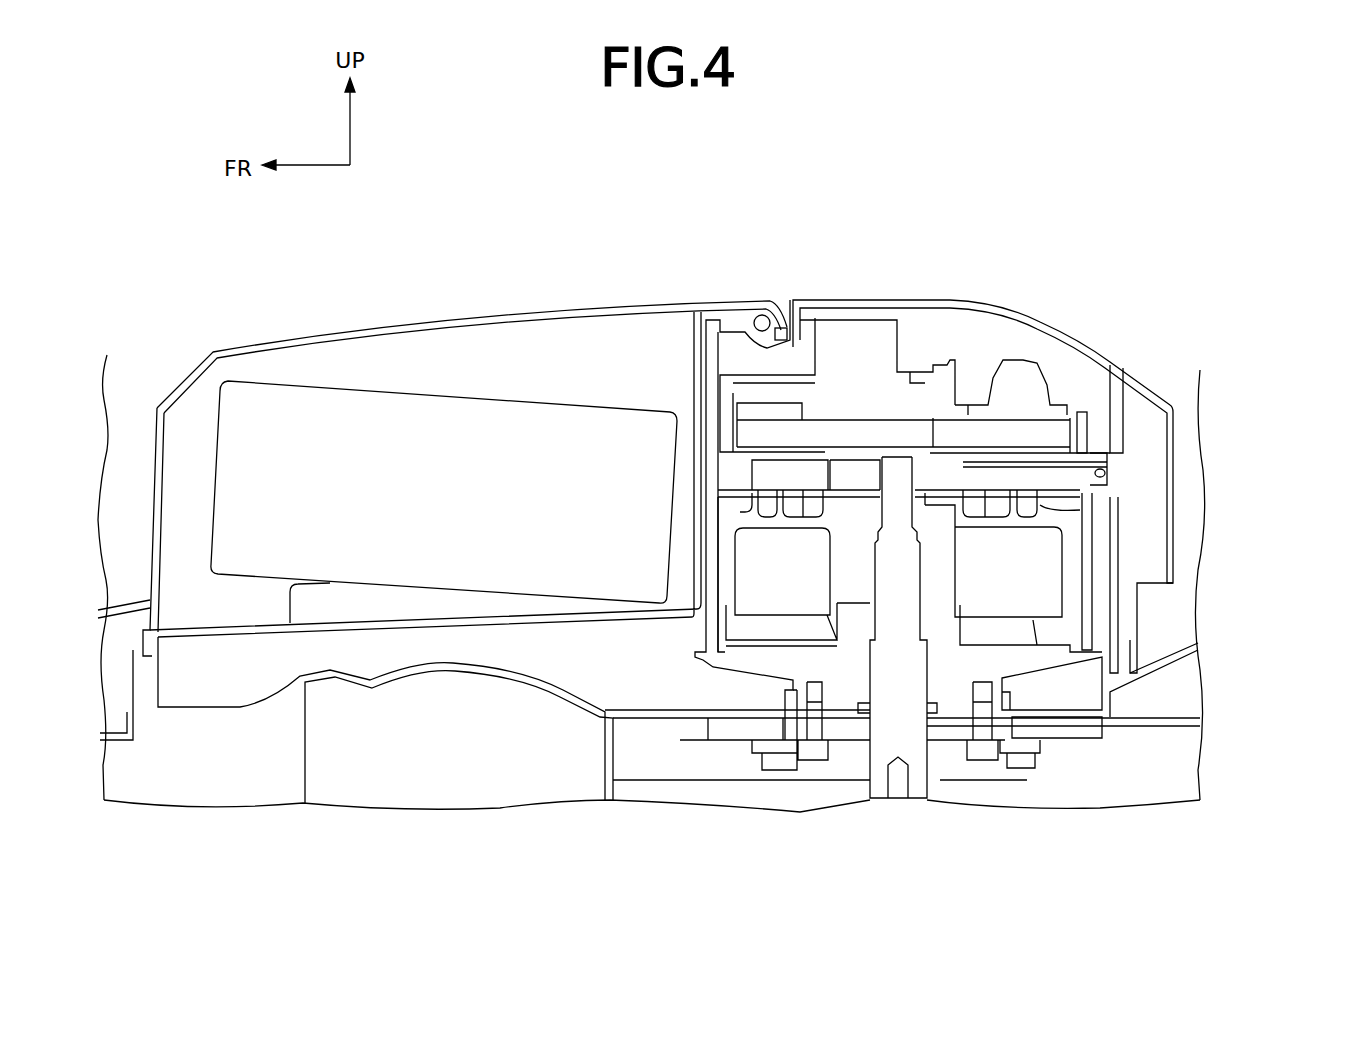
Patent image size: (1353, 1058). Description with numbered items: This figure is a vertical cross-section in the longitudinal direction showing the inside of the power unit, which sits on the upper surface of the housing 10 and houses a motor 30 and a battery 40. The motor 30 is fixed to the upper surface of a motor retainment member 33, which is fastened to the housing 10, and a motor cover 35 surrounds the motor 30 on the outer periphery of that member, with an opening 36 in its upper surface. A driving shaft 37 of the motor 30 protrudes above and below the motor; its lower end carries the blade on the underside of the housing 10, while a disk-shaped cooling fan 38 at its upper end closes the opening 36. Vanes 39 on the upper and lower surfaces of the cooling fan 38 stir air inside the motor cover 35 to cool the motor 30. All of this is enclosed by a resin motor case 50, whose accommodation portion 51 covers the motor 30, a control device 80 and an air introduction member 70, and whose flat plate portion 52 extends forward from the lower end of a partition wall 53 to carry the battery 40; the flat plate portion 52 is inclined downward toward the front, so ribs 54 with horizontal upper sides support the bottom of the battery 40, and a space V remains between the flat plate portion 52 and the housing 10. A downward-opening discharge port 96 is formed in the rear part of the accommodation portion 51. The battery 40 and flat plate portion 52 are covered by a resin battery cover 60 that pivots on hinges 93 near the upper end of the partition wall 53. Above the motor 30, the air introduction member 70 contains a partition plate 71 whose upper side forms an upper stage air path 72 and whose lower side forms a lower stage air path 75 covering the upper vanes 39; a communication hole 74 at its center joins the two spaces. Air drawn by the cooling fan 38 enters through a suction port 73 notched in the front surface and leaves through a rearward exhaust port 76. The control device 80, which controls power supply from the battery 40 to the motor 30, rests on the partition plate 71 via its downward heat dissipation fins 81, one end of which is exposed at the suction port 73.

The housing 10 is at (647, 718).
The motor 30 is at (1033, 572).
The motor retainment member 33 is at (1053, 660).
The motor cover 35 is at (707, 617).
The opening 36 is at (1043, 500).
The driving shaft 37 is at (915, 667).
The cooling fan 38 is at (865, 465).
The vanes 39 is at (828, 450).
The battery 40 is at (403, 430).
The motor case 50 is at (984, 292).
The accommodation portion 51 is at (1177, 473).
The flat plate portion 52 is at (488, 634).
The partition wall 53 is at (705, 350).
The ribs 54 is at (348, 600).
The battery cover 60 is at (521, 312).
The air introduction member 70 is at (1106, 362).
The partition plate 71 is at (1062, 475).
The upper stage air path 72 is at (783, 437).
The suction port 73 is at (724, 410).
The communication hole 74 is at (960, 447).
The lower stage air path 75 is at (1097, 425).
The exhaust port 76 is at (1110, 480).
The control device 80 is at (918, 392).
The heat dissipation fins 81 is at (938, 412).
The hinges 93 is at (760, 312).
The discharge port 96 is at (1153, 587).
The space V is at (248, 655).